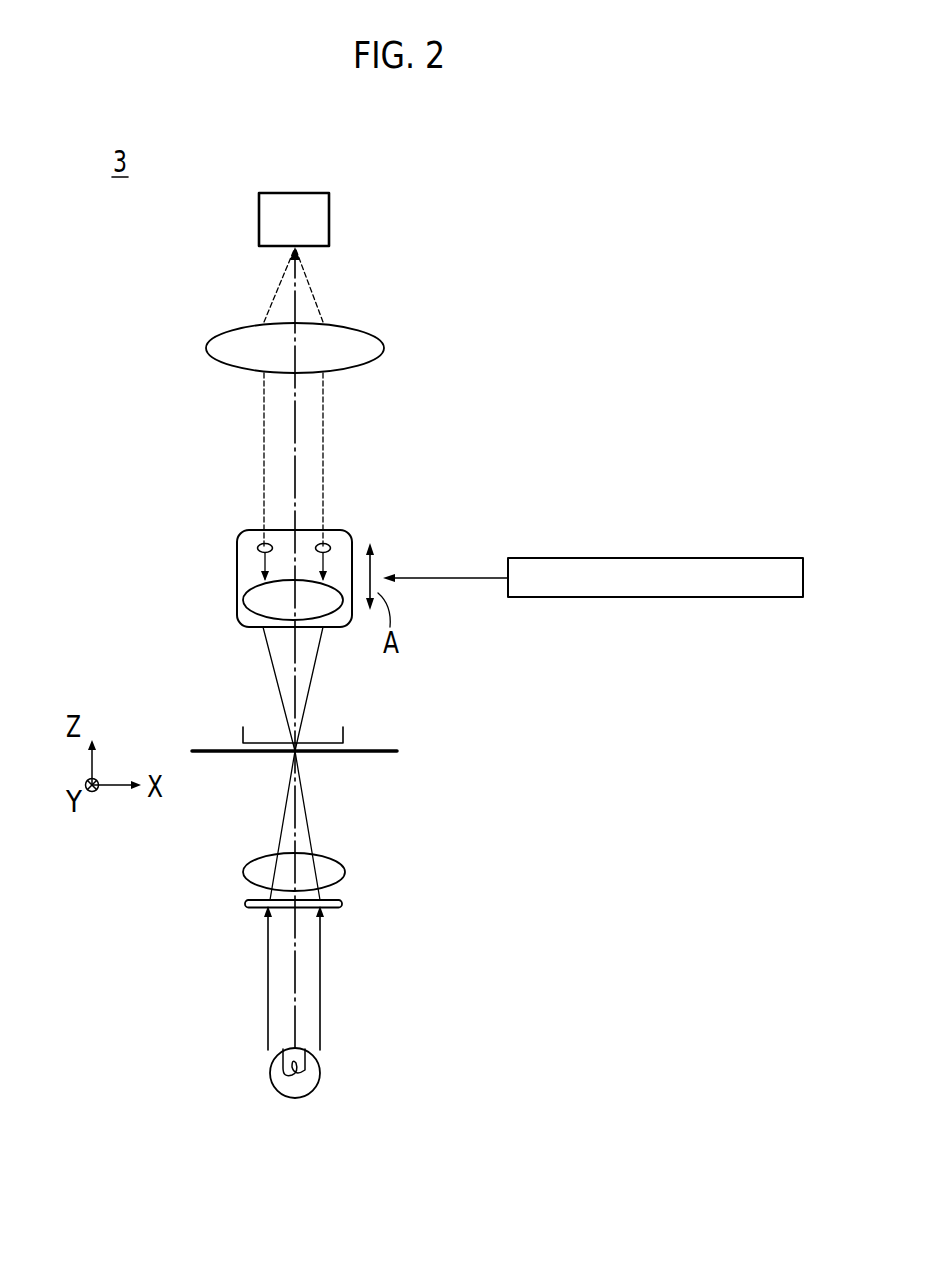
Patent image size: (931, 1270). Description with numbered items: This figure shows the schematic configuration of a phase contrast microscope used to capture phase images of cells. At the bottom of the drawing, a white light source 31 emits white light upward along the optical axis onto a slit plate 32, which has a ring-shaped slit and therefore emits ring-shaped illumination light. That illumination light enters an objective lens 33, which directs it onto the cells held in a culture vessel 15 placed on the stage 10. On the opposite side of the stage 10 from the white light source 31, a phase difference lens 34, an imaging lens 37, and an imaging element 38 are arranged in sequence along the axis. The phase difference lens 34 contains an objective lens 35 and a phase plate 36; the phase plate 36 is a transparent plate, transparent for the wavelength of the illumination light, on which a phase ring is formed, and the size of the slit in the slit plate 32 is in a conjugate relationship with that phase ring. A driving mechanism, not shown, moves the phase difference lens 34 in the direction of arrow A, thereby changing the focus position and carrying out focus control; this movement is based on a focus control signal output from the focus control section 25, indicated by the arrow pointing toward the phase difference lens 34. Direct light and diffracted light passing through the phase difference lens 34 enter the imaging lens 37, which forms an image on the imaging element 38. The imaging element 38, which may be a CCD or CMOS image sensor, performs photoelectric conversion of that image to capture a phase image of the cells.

The stage 10 is at (370, 753).
The culture vessel 15 is at (343, 733).
The focus control section 25 is at (527, 597).
The white light source 31 is at (270, 1078).
The slit plate 32 is at (342, 903).
The objective lens 33 is at (242, 872).
The phase difference lens 34 is at (237, 608).
The objective lens 35 is at (258, 590).
The phase plate 36 is at (257, 549).
The imaging lens 37 is at (206, 349).
The imaging element 38 is at (259, 212).